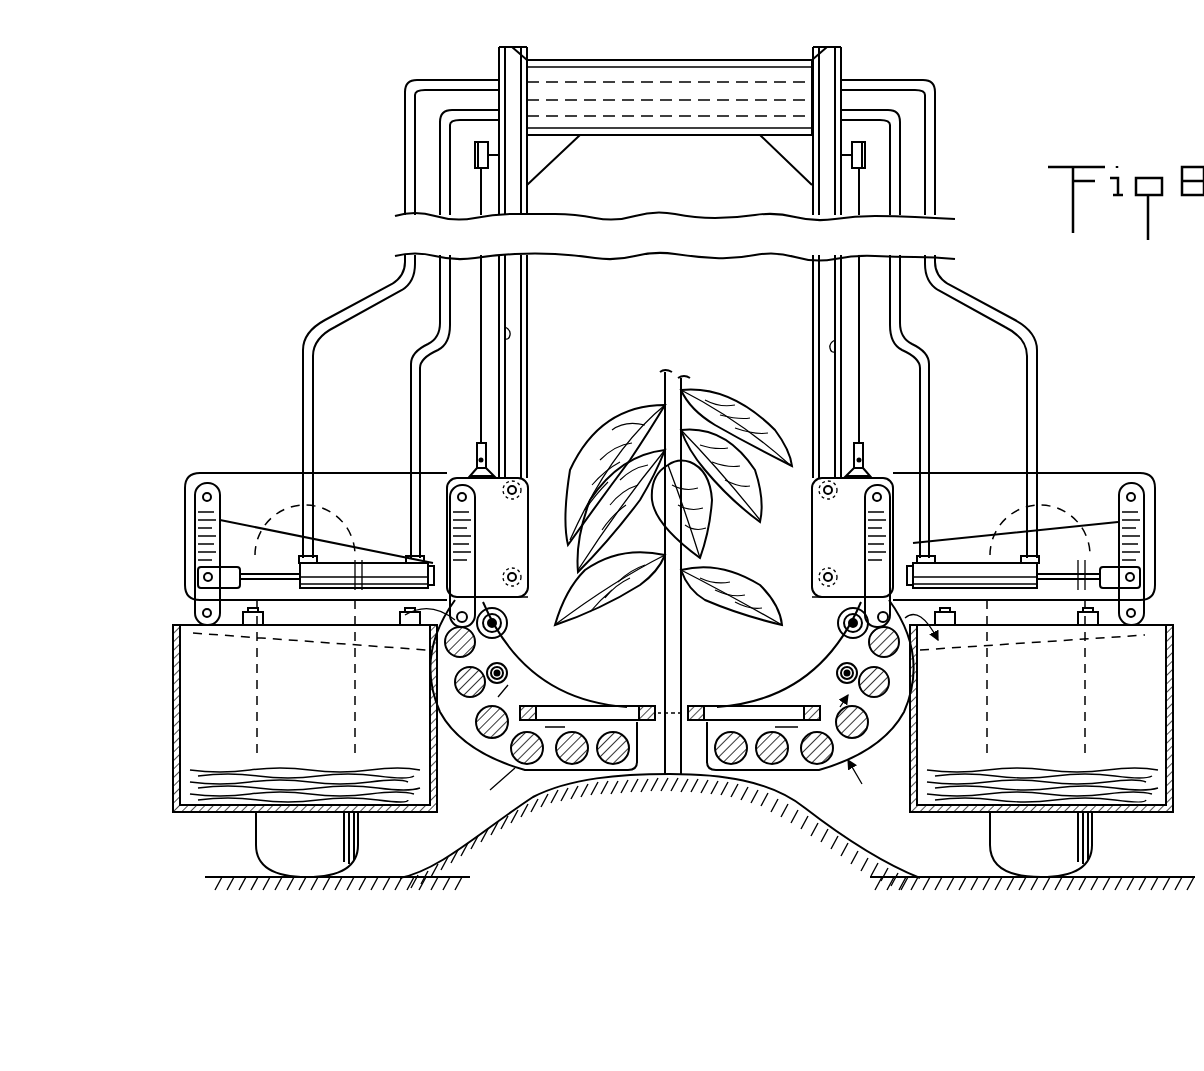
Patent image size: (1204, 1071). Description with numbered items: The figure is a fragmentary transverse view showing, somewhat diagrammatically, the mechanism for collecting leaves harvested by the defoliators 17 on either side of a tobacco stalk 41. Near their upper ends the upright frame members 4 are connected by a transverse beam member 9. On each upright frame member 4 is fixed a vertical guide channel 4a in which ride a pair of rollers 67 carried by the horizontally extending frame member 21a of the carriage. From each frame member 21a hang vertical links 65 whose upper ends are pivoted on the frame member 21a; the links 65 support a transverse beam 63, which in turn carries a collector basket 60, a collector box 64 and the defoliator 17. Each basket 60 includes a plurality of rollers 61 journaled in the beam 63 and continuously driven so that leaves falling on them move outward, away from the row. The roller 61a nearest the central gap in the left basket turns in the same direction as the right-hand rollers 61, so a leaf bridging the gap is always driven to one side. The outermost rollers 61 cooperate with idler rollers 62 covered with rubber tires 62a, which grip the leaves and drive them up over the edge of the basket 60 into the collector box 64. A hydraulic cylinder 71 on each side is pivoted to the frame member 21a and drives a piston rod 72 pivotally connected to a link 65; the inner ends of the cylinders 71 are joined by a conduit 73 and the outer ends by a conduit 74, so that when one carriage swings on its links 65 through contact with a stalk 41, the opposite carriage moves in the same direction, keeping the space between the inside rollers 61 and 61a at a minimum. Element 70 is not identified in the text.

The transverse beam member 9 is at (645, 140).
The upright frame member 4 is at (796, 278).
The guide channel 4a is at (830, 345).
The control rod 70 is at (480, 414).
The conduit 74 is at (1045, 393).
The conduit 73 is at (945, 403).
The frame member 21a is at (987, 482).
The roller 67 is at (818, 574).
The link 65 is at (862, 505).
The hydraulic cylinder 71 is at (968, 565).
The piston rod 72 is at (1072, 560).
The collector box 64 is at (1150, 638).
The transverse beam 63 is at (838, 620).
The idler roller 62 is at (852, 605).
The rubber tire 62a is at (840, 672).
The collector basket 60 is at (671, 704).
The roller 61 is at (885, 682).
The roller 61a is at (613, 770).
The defoliator 17 is at (722, 697).
The tobacco stalk 41 is at (665, 777).